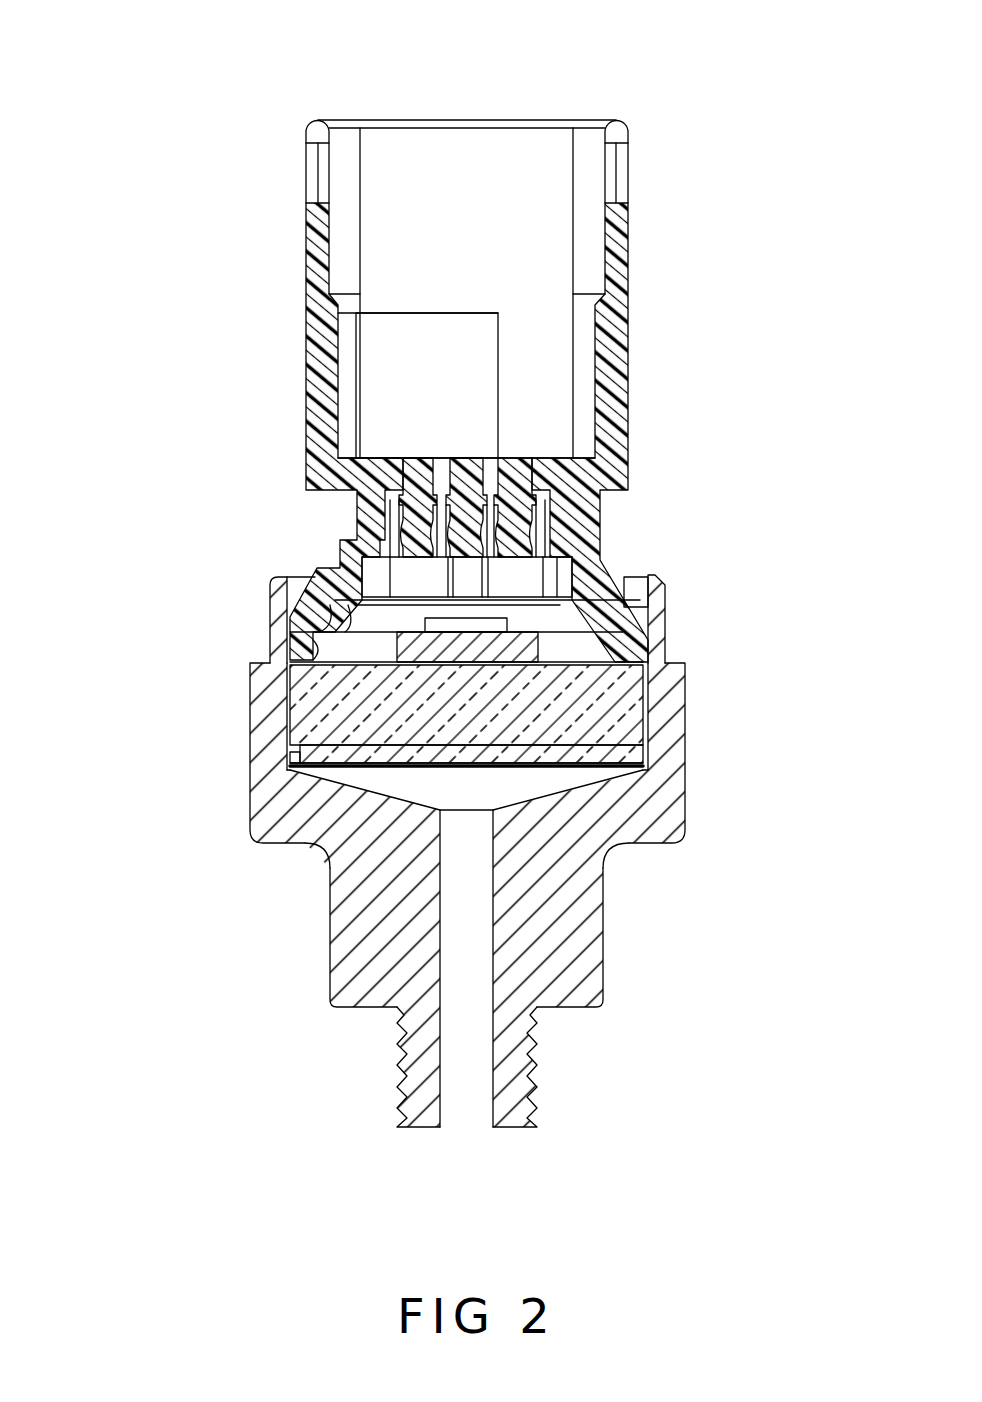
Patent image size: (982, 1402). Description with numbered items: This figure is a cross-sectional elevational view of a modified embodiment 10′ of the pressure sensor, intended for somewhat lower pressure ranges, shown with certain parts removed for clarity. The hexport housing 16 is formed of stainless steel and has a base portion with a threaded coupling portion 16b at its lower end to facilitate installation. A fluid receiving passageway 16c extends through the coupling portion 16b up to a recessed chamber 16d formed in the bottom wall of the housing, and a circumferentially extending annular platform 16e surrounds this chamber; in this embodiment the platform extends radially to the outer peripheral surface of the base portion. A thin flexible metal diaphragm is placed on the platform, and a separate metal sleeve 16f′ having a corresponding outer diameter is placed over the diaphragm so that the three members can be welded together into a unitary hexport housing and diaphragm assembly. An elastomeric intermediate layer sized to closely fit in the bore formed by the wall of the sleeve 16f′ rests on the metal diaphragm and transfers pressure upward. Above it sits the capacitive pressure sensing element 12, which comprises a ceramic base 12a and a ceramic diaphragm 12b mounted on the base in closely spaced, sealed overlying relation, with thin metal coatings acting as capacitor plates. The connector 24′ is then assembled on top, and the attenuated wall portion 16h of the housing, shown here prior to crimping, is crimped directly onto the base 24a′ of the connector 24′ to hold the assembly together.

The modified embodiment 10′ is at (327, 95).
The connector 24′ is at (628, 265).
The base of the connector 24a′ is at (617, 568).
The attenuated wall portion 16h is at (655, 600).
The metal sleeve 16f′ is at (675, 710).
The capacitive pressure sensing element 12 is at (310, 710).
The ceramic base 12a is at (322, 725).
The diaphragm 12b is at (300, 766).
The threaded coupling portion 16b is at (540, 1086).
The fluid receiving passageway 16c is at (493, 1087).
The recessed chamber 16d is at (540, 778).
The annular platform 16e is at (617, 765).
The hexport housing 16 is at (604, 920).